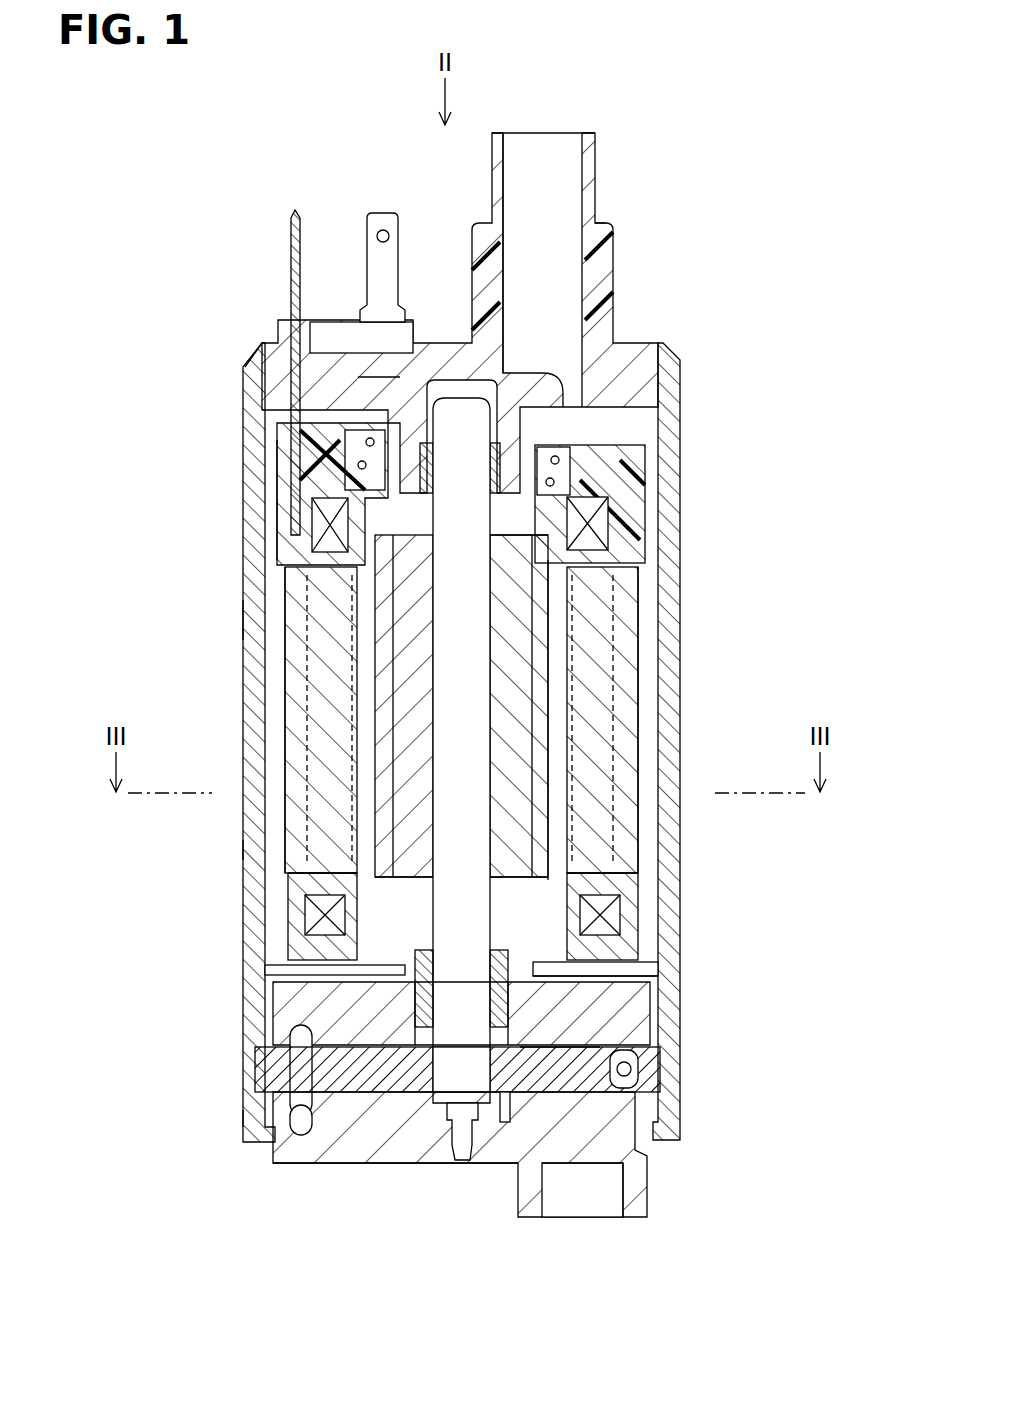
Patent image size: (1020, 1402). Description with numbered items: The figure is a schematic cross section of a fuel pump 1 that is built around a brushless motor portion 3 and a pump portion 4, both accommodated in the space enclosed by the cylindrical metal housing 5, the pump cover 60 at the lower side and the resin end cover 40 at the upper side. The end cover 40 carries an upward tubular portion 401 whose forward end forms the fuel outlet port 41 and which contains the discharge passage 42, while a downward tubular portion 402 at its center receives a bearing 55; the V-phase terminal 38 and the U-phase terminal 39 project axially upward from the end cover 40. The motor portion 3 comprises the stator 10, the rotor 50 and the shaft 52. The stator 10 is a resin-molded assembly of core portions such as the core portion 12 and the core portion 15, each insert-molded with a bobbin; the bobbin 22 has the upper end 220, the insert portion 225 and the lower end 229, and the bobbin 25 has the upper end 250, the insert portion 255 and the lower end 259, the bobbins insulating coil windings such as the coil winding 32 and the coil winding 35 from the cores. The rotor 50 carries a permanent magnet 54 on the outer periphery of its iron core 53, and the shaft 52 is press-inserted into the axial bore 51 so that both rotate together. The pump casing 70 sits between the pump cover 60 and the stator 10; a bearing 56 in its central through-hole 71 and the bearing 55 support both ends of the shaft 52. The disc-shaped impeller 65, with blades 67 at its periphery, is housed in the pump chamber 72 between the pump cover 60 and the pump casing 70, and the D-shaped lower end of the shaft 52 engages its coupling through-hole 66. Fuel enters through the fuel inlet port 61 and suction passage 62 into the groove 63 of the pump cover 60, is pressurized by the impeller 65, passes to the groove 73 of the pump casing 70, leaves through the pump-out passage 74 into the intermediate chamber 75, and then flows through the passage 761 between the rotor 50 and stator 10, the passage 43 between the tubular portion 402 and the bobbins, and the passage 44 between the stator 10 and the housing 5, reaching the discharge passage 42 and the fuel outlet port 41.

The fuel pump 1 is at (224, 125).
The motor portion 3 is at (150, 622).
The pump portion 4 is at (192, 1130).
The housing 5 is at (245, 847).
The stator 10 is at (655, 642).
The core portion 12 is at (300, 665).
The core portion 15 is at (615, 718).
The bobbin 22 is at (276, 535).
The bobbin 25 is at (645, 500).
The coil winding 32 is at (322, 908).
The coil winding 35 is at (620, 913).
The V-phase terminal 38 is at (290, 222).
The U-phase terminal 39 is at (380, 222).
The end cover 40 is at (338, 375).
The fuel outlet port 41 is at (555, 133).
The discharge passage 42 is at (555, 285).
The passage 43 is at (522, 460).
The passage 44 is at (276, 607).
The rotor 50 is at (361, 733).
The axial bore 51 is at (440, 765).
The shaft 52 is at (447, 808).
The iron core 53 is at (520, 765).
The permanent magnet 54 is at (540, 860).
The bearing 55 is at (330, 505).
The bearing 56 is at (520, 995).
The pump cover 60 is at (345, 1163).
The fuel inlet port 61 is at (572, 1220).
The suction passage 62 is at (615, 1135).
The groove 63 is at (330, 1145).
The impeller 65 is at (640, 1080).
The coupling through-hole 66 is at (478, 1060).
The blades 67 is at (560, 1040).
The pump casing 70 is at (385, 1120).
The through-hole 71 is at (300, 975).
The pump chamber 72 is at (262, 1080).
The groove 73 is at (300, 1045).
The pump-out passage 74 is at (305, 1000).
The intermediate chamber 75 is at (600, 970).
The upper end 220 is at (280, 503).
The insert portion 225 is at (310, 637).
The lower end 229 is at (305, 888).
The upper end 250 is at (625, 540).
The insert portion 255 is at (560, 748).
The lower end 259 is at (625, 890).
The tubular portion 401 is at (607, 240).
The tubular portion 402 is at (360, 400).
The passage 761 is at (555, 665).